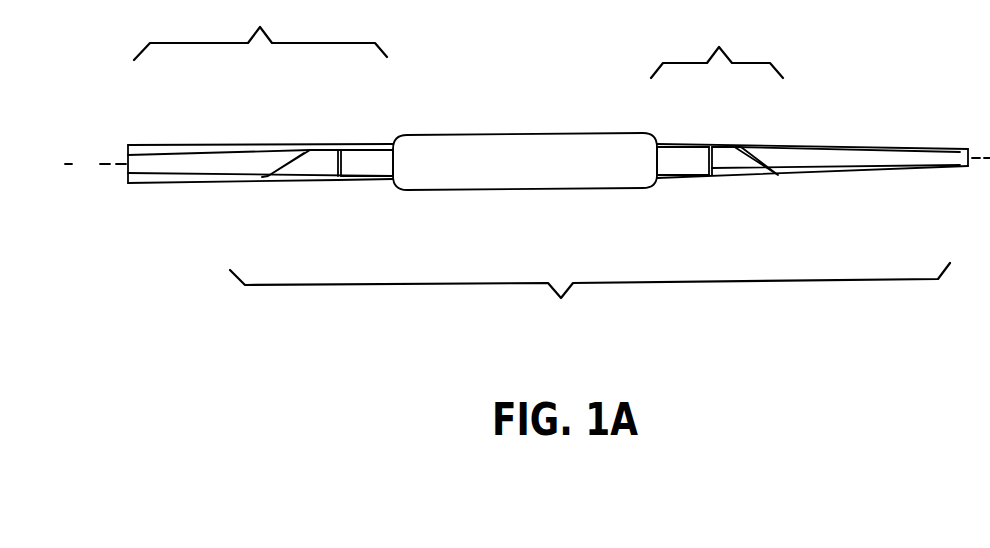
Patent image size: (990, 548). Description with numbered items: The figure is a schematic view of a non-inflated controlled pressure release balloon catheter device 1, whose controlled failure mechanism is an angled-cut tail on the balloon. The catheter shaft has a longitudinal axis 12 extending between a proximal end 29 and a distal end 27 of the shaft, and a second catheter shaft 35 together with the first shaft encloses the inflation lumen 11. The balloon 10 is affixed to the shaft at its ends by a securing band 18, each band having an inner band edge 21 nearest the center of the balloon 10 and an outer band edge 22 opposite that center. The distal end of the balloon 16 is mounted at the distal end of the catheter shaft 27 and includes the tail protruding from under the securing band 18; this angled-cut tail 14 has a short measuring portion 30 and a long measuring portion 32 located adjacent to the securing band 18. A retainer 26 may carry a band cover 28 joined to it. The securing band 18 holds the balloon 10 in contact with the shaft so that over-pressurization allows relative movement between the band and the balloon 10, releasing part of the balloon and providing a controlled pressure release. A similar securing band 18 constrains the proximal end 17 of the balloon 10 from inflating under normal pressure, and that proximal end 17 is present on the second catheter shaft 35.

The lead assembly 1 is at (590, 298).
The balloon 10 is at (512, 137).
The inflation lumen 11 is at (200, 150).
The longitudinal axis 12 is at (95, 165).
The angled-cut tail 14 is at (752, 169).
The distal end of the balloon 16 is at (717, 47).
The proximal end of the balloon 17 is at (260, 30).
The securing band 18 is at (370, 172).
The inner band edge 21 is at (388, 184).
The outer band edge 22 is at (335, 166).
The retainer 26 is at (775, 143).
The distal end of the catheter shaft 27 is at (957, 150).
The band cover 28 is at (683, 143).
The proximal end of the catheter shaft 29 is at (149, 160).
The short measuring portion 30 is at (737, 146).
The long measuring portion 32 is at (779, 175).
The second catheter shaft 35 is at (240, 180).